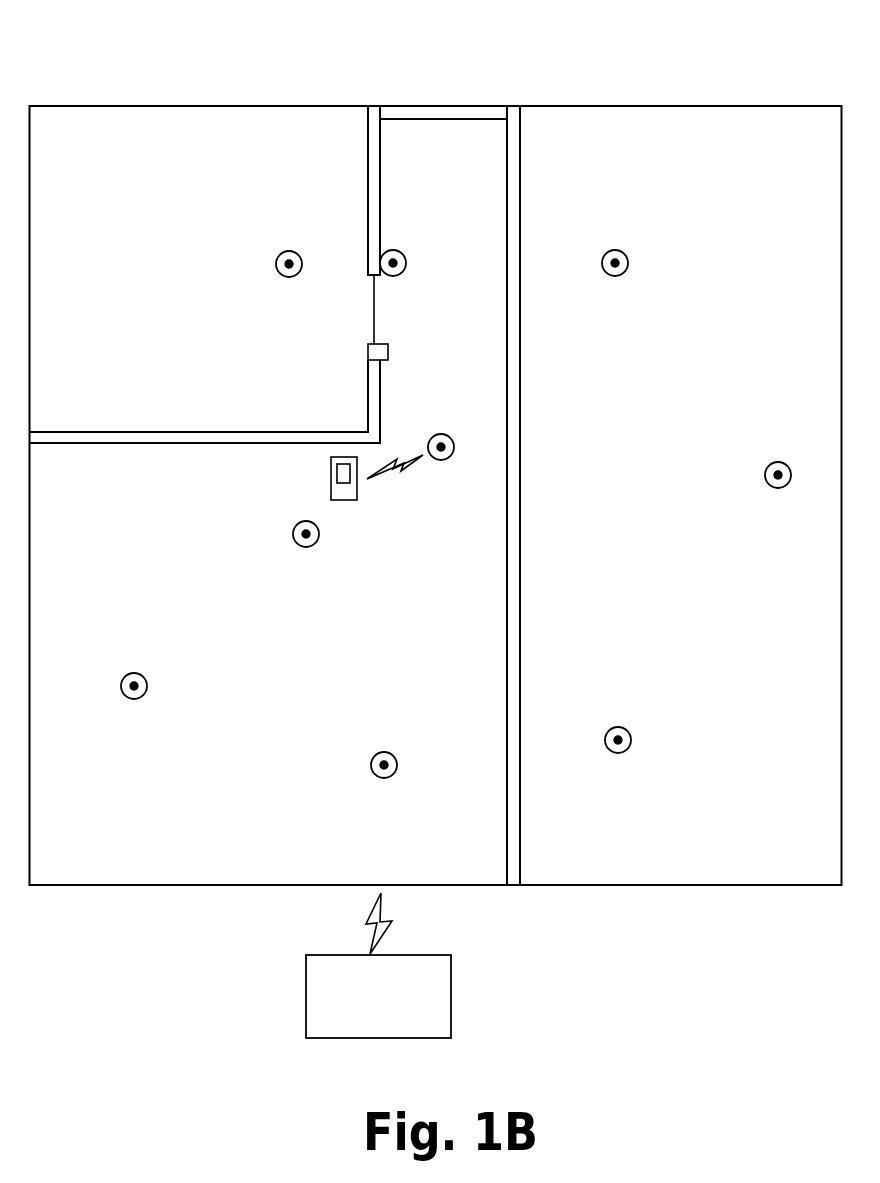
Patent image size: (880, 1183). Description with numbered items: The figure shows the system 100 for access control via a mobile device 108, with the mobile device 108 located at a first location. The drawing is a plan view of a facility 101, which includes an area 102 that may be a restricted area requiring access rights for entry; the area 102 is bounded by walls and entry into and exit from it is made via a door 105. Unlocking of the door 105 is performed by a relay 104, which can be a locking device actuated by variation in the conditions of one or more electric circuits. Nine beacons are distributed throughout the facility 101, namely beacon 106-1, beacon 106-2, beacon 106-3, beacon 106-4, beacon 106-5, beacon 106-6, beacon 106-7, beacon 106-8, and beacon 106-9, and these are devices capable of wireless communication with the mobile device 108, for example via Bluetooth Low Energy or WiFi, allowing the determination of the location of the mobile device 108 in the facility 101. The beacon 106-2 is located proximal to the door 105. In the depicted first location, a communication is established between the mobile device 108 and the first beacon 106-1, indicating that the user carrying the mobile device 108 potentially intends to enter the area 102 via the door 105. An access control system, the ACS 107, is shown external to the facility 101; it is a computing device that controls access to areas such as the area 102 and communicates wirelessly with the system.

The system 100 is at (436, 555).
The facility 101 is at (629, 58).
The area 102 is at (128, 236).
The relay 104 is at (372, 352).
The door 105 is at (356, 295).
The beacon 106-1 is at (441, 447).
The beacon 106-2 is at (393, 263).
The beacon 106-3 is at (289, 264).
The beacon 106-4 is at (134, 686).
The beacon 106-5 is at (306, 534).
The beacon 106-6 is at (384, 765).
The beacon 106-7 is at (615, 263).
The beacon 106-8 is at (778, 475).
The beacon 106-9 is at (618, 740).
The ACS 107 is at (306, 996).
The mobile device 108 is at (331, 468).